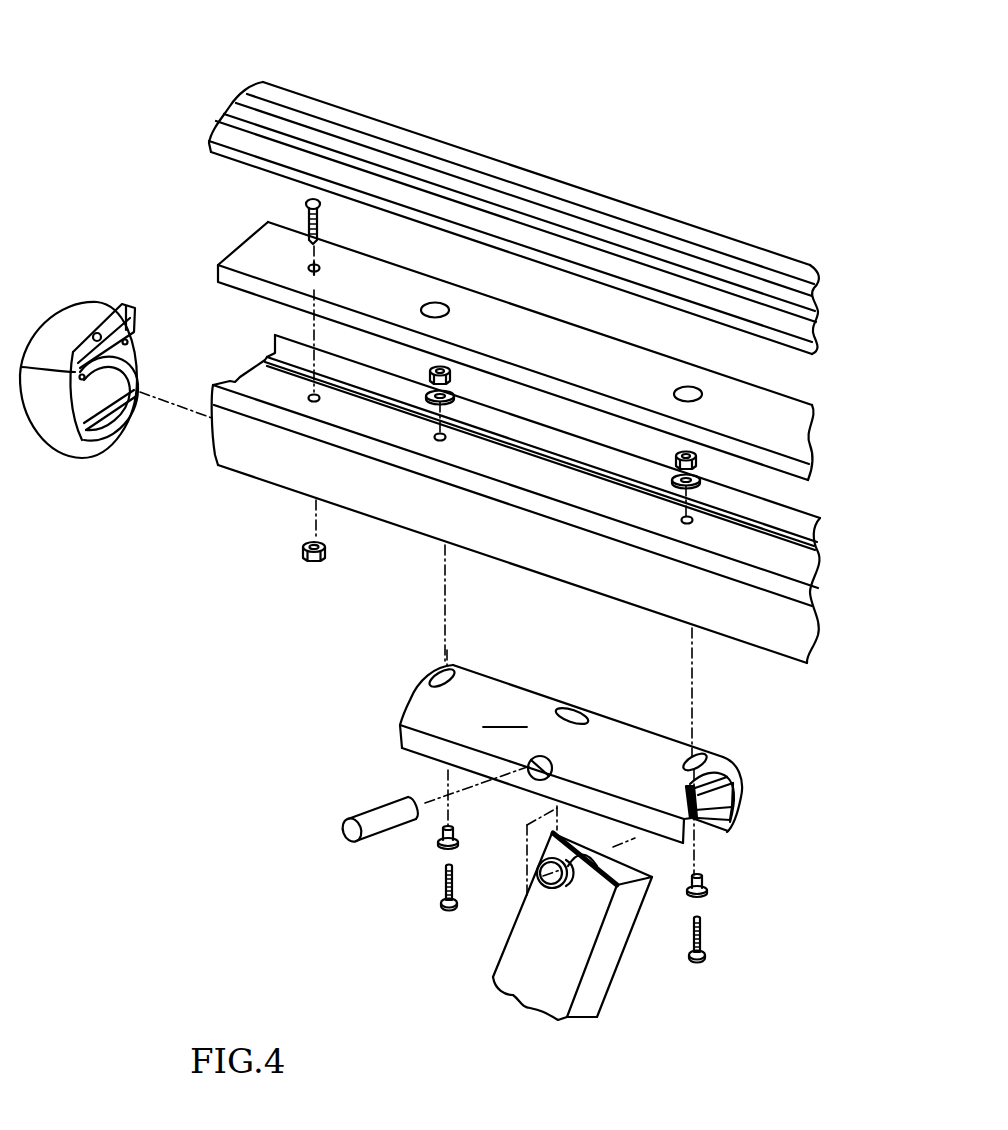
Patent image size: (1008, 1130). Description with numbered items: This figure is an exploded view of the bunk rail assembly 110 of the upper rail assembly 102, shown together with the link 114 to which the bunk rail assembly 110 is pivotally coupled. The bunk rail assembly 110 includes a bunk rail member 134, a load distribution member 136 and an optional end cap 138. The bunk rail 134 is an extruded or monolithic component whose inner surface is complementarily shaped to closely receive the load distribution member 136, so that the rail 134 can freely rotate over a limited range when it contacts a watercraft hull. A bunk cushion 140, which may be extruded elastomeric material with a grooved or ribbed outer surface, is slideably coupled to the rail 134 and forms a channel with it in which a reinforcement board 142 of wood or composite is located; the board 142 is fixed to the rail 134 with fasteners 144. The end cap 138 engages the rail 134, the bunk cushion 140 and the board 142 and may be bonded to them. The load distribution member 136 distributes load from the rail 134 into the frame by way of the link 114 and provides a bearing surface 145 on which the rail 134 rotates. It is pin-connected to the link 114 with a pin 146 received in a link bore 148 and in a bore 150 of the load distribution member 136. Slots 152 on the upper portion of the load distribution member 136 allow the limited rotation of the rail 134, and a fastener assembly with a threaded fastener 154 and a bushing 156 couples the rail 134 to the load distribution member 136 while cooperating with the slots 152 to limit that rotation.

The upper rail assembly 102 is at (119, 93).
The bunk rail assembly 110 is at (627, 90).
The link 114 is at (617, 940).
The bunk rail member 134 is at (283, 463).
The load distribution member 136 is at (742, 790).
The end cap 138 is at (68, 318).
The bunk cushion 140 is at (308, 96).
The reinforcement board 142 is at (257, 250).
The fasteners 144 is at (300, 223).
The bearing surface 145 is at (561, 781).
The pin 146 is at (380, 813).
The link bore 148 is at (547, 887).
The bore 150 is at (538, 782).
The slots 152 is at (445, 668).
The threaded fastener 154 is at (442, 885).
The bushing 156 is at (433, 838).